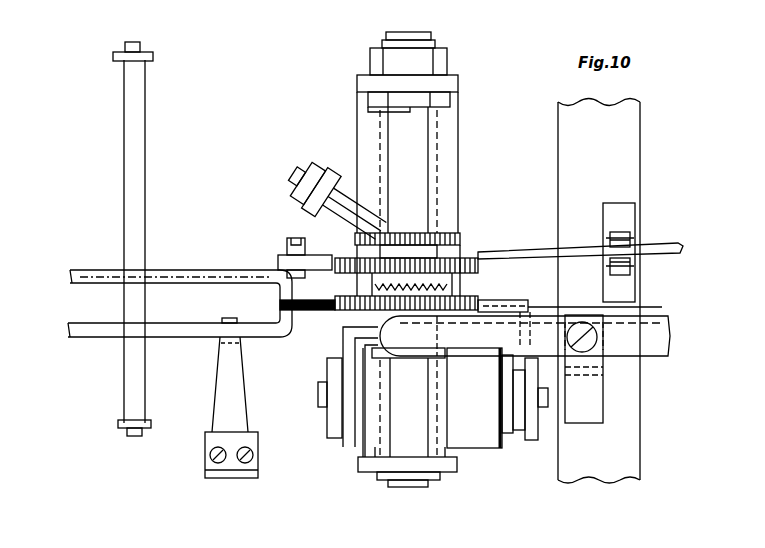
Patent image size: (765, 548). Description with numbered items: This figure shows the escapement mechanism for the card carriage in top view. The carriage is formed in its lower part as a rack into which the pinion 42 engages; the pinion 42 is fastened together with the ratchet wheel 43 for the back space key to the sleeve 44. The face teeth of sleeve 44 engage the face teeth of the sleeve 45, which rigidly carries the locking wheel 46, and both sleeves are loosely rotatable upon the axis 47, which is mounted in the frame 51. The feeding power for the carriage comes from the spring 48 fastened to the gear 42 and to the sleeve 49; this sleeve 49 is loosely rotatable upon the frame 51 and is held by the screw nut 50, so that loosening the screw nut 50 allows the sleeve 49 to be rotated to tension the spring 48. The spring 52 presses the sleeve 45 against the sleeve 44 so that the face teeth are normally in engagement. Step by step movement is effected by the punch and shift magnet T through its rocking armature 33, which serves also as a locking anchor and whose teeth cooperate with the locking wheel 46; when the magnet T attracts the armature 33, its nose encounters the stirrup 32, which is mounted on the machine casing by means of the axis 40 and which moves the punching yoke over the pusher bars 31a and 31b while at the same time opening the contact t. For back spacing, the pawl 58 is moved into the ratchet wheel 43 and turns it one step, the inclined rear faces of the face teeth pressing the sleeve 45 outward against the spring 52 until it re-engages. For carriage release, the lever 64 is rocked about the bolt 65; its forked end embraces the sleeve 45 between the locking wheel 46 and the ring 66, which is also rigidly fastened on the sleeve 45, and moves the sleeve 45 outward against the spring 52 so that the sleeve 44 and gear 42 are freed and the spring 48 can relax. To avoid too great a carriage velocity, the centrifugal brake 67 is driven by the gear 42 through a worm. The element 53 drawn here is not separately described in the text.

The pusher bar 31a is at (125, 428).
The pusher bar 31b is at (148, 55).
The stirrup 32 is at (95, 275).
The armature 33 is at (300, 305).
The axis 40 is at (135, 95).
The pinion 42 is at (460, 240).
The ratchet wheel 43 is at (418, 253).
The sleeve 44 is at (478, 265).
The sleeve 45 is at (385, 328).
The locking wheel 46 is at (581, 309).
The axis 47 is at (410, 138).
The spring 48 is at (432, 162).
The sleeve 49 is at (435, 102).
The screw nut 50 is at (372, 58).
The frame 51 is at (447, 200).
The spring 52 is at (382, 435).
The plate 53 is at (518, 408).
The pawl 58 is at (302, 265).
The lever 64 is at (632, 342).
The bolt 65 is at (593, 342).
The ring 66 is at (401, 355).
The centrifugal brake 67 is at (316, 185).
The contact t is at (207, 443).
The punch and shift magnet T is at (472, 418).